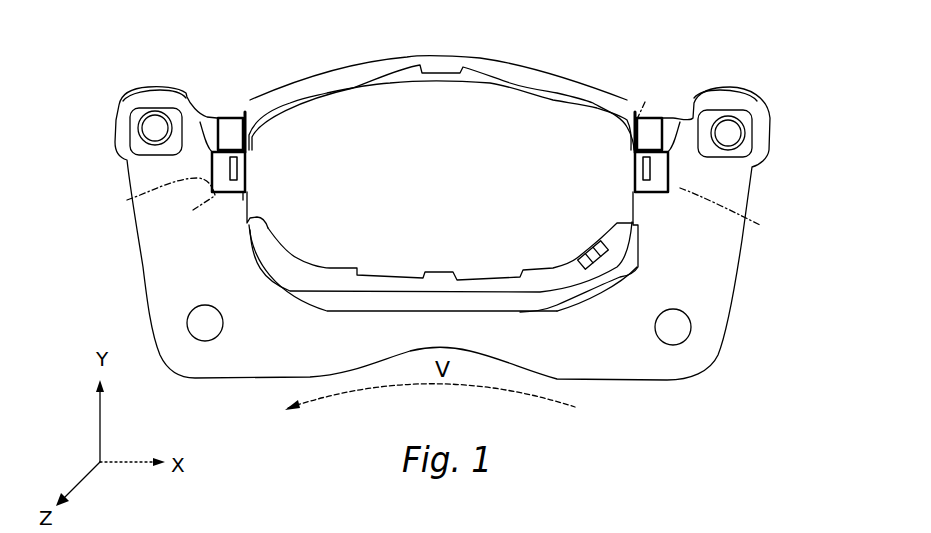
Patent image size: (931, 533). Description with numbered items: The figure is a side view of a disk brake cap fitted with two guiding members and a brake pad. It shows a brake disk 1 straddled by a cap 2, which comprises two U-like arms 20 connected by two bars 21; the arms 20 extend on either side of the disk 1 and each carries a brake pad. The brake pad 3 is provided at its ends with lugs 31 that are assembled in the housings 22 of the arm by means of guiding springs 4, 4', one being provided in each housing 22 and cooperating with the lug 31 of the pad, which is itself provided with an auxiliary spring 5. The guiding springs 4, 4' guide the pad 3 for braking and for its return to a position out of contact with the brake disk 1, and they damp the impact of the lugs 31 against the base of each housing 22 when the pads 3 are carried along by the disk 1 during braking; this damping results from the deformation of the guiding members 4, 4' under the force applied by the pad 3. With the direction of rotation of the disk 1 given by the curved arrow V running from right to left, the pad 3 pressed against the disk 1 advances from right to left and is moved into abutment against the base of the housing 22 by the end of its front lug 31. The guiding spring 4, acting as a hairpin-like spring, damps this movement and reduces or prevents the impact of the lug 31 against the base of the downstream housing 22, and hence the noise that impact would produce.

The brake disk 1 is at (552, 72).
The cap 2 is at (645, 385).
The brake pad 3 is at (362, 123).
The guiding spring 4 is at (166, 240).
The guiding spring 4' is at (660, 79).
The auxiliary spring 5 is at (193, 210).
The arm 20 is at (705, 312).
The bar 21 is at (150, 124).
The housing 22 is at (127, 200).
The lug 31 is at (221, 115).